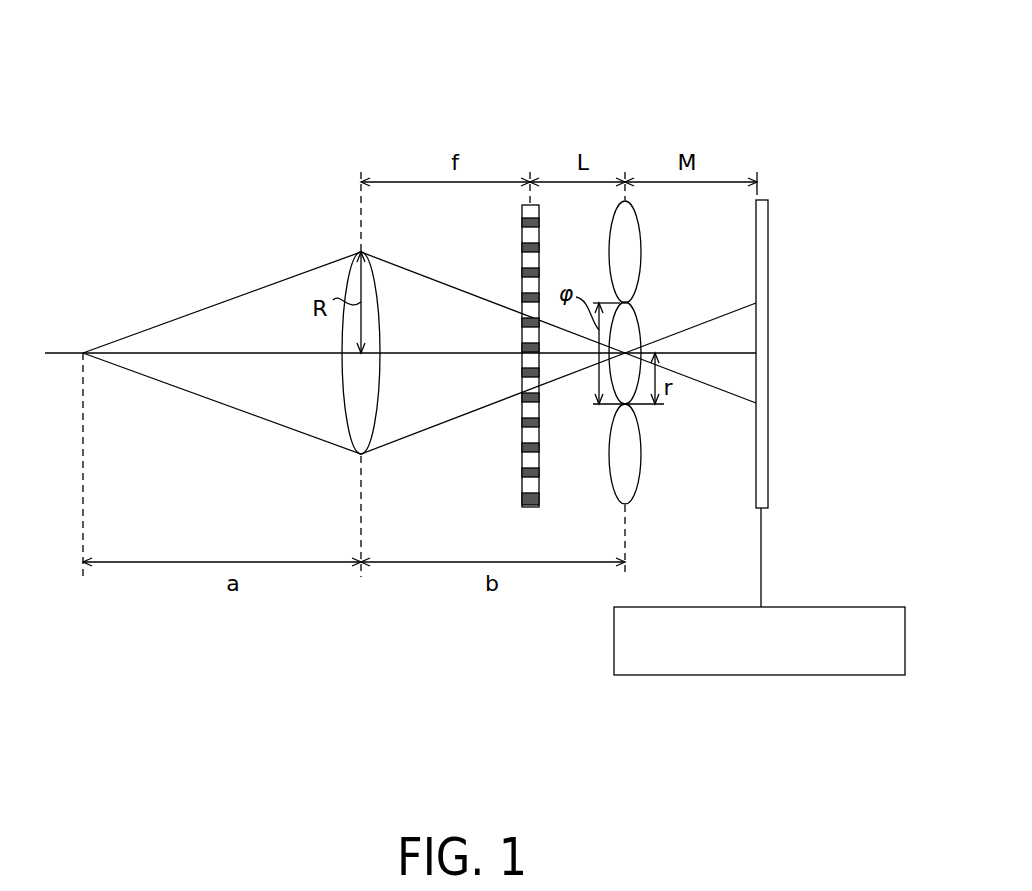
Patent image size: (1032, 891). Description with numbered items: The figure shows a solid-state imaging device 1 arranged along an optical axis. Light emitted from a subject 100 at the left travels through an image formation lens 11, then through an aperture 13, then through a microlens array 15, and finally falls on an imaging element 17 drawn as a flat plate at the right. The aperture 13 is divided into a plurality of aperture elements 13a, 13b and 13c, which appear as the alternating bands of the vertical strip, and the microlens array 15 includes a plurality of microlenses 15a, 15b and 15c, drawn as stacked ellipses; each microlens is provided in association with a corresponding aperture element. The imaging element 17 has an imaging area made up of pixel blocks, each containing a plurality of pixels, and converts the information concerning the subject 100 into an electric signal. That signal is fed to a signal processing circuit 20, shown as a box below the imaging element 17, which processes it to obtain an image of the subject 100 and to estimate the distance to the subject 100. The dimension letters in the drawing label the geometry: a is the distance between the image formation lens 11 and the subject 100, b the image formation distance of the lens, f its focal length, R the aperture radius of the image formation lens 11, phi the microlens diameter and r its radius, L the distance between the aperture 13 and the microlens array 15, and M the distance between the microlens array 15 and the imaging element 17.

The solid-state imaging device 1 is at (697, 42).
The subject 100 is at (84, 352).
The image formation lens 11 is at (355, 440).
The aperture 13 is at (465, 358).
The aperture element 13a is at (516, 443).
The aperture element 13b is at (516, 368).
The aperture element 13c is at (516, 248).
The microlens array 15 is at (666, 374).
The microlens 15a is at (630, 475).
The microlens 15b is at (632, 328).
The microlens 15c is at (630, 230).
The imaging element 17 is at (762, 205).
The signal processing circuit 20 is at (728, 675).